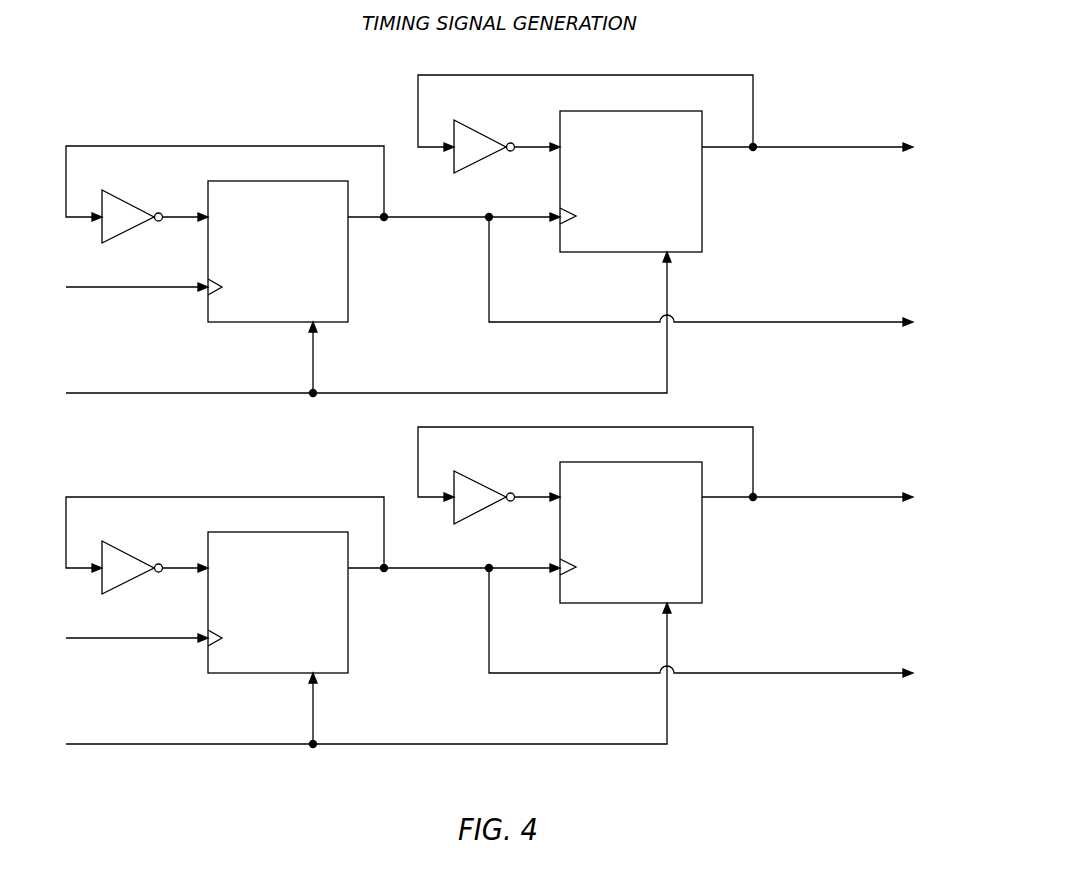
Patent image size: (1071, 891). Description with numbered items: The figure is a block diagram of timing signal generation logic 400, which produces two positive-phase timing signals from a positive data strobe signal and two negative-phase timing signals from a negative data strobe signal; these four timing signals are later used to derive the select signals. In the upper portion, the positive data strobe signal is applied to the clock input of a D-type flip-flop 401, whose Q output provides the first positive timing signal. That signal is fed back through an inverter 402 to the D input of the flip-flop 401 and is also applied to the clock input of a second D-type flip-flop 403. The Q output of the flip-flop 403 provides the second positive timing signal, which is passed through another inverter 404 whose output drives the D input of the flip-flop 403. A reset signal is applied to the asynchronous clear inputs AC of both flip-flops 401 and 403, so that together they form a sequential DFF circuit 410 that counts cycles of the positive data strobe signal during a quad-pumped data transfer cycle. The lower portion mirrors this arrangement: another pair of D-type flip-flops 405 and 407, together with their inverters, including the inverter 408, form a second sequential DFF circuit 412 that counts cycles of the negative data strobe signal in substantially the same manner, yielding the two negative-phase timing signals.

The timing signal generation logic 400 is at (291, 93).
The D-type flip-flop 401 is at (263, 261).
The inverter 402 is at (132, 205).
The D-type flip-flop 403 is at (616, 191).
The inverter 404 is at (481, 133).
The D-type flip-flop 405 is at (128, 557).
The D-type flip-flop 407 is at (616, 543).
The inverter 408 is at (476, 483).
The sequential DFF circuit 410 is at (433, 270).
The sequential DFF circuit 412 is at (438, 650).